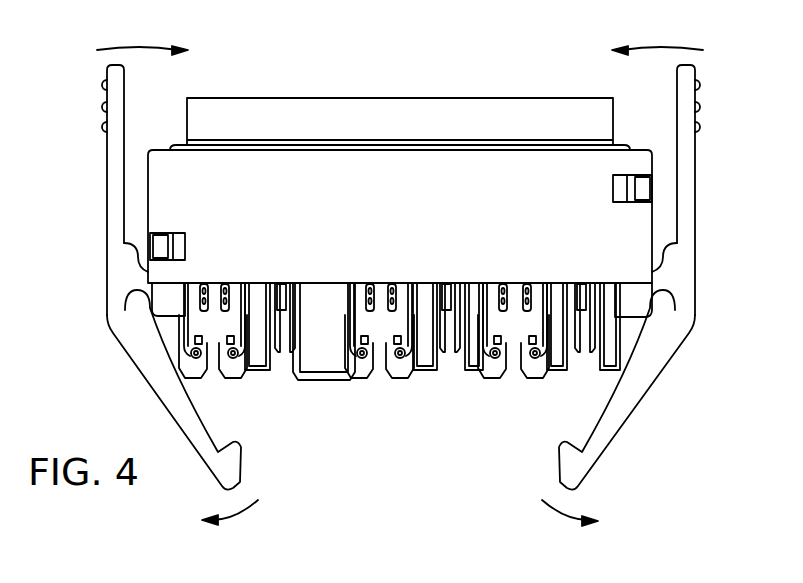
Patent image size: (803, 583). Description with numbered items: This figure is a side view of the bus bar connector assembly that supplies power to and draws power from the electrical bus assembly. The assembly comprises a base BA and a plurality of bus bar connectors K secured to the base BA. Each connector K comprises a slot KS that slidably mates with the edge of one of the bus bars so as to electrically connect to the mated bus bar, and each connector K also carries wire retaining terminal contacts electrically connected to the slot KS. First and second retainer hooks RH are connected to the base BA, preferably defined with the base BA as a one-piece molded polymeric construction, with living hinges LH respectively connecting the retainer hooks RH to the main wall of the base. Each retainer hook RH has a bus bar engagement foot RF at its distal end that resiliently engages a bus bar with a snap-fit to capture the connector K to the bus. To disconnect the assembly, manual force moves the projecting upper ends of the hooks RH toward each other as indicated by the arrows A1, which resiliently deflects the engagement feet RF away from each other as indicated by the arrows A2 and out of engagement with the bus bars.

The arrows indicating movement of upper ends A1 is at (146, 46).
The arrows indicating deflection of engagement feet A2 is at (258, 500).
The retainer hook RH is at (112, 210).
The living hinge LH is at (124, 243).
The base BA is at (157, 308).
The bus bar engagement foot RF is at (220, 442).
The bus bar connector K is at (420, 373).
The slot KS is at (273, 335).